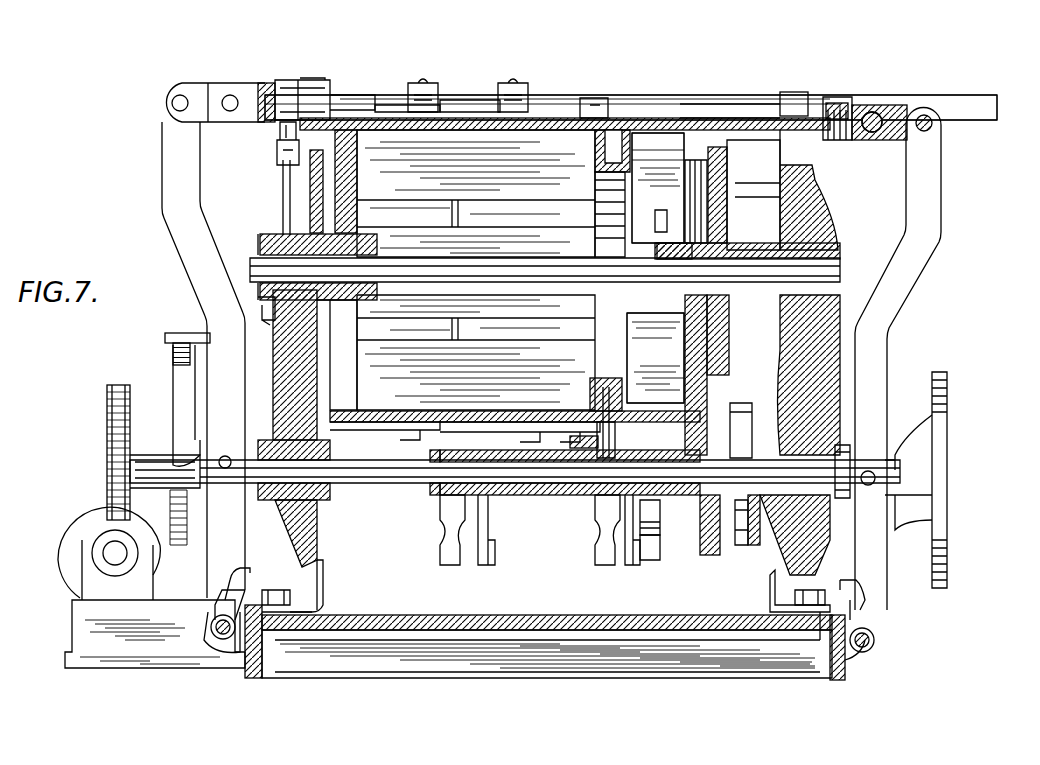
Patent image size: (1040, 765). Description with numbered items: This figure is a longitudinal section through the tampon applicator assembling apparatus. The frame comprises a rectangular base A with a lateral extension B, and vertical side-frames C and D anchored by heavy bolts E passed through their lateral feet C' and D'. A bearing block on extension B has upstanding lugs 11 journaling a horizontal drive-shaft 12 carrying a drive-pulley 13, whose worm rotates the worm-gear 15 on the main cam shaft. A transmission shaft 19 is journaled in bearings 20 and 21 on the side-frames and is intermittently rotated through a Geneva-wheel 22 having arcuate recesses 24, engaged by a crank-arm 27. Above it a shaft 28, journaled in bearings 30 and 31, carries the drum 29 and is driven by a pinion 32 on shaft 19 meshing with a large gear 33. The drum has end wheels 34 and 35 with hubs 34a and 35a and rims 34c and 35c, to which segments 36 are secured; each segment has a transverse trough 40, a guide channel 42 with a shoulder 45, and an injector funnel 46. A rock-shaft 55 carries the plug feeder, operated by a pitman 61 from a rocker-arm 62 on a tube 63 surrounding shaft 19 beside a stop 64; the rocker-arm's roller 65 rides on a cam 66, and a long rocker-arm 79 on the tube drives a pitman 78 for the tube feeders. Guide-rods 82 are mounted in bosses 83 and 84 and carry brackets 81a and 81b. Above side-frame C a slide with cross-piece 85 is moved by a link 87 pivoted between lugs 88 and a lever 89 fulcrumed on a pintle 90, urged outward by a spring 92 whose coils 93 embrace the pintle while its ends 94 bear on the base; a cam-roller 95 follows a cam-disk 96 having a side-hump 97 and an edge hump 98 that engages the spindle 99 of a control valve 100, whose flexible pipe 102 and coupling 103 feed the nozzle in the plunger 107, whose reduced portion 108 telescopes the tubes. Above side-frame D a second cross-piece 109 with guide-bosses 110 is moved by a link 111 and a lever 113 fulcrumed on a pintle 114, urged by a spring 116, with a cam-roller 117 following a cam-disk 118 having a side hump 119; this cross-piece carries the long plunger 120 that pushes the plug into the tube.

The guide-rods 82 is at (980, 108).
The link 87 is at (212, 85).
The lugs 88 is at (237, 118).
The cross-piece 85 is at (266, 85).
The plunger 107 is at (295, 95).
The bosses 83 is at (315, 80).
The reduced portion 108 is at (367, 95).
The guide channel 42 is at (395, 105).
The bracket 81a is at (432, 82).
The shoulder 45 is at (485, 100).
The bracket 81b is at (525, 82).
The injector funnel 46 is at (605, 98).
The long plunger 120 is at (742, 112).
The bosses 84 is at (795, 92).
The guide-bosses 110 is at (838, 97).
The cross-piece 109 is at (845, 105).
The link 111 is at (898, 105).
The lever 89 is at (168, 162).
The cam-roller 95 is at (245, 435).
The lever 113 is at (935, 186).
The base A is at (413, 665).
The spring ends 94 is at (272, 640).
The lateral extension B is at (113, 668).
The drive-pulley 13 is at (78, 522).
The drive-shaft 12 is at (106, 553).
The lugs 11 is at (80, 580).
The worm-gear 15 is at (112, 455).
The side-hump 97 is at (195, 455).
The cam-disk 96 is at (176, 395).
The edge hump 98 is at (172, 350).
The spindle 99 is at (197, 335).
The control valve 100 is at (258, 302).
The shaft 28 is at (552, 276).
The transmission shaft 19 is at (356, 478).
The transverse trough 40 is at (600, 150).
The rim 34c is at (357, 163).
The hub 34a is at (378, 250).
The bearing 30 is at (268, 235).
The flexible pipe 102 is at (285, 205).
The coupling 103 is at (278, 152).
The rim 35c is at (692, 165).
The pitman 61 is at (656, 220).
The gear 33 is at (725, 200).
The rock-shaft 55 is at (755, 183).
The bearing 31 is at (835, 250).
The hub 35a is at (670, 244).
The end wheel 34 is at (355, 322).
The pitman 78 is at (452, 325).
The segments 36 is at (510, 355).
The end wheel 35 is at (690, 345).
The crank-arm 27 is at (740, 405).
The bearing 21 is at (805, 505).
The drum 29 is at (366, 430).
The bearing 20 is at (280, 500).
The tube 63 is at (522, 495).
The stop 64 is at (430, 492).
The long rocker-arm 79 is at (478, 500).
The rocker-arm 62 is at (605, 525).
The cam 66 is at (655, 515).
The roller 65 is at (652, 560).
The pinion 32 is at (705, 545).
The Geneva-wheel 22 is at (742, 530).
The arcuate recesses 24 is at (760, 545).
The cam-roller 117 is at (843, 455).
The cam-disk 118 is at (948, 390).
The side hump 119 is at (905, 452).
The spring 92 is at (215, 578).
The coils 93 is at (212, 636).
The pintle 90 is at (232, 652).
The spring 116 is at (870, 612).
The pintle 114 is at (874, 643).
The side-frame C is at (315, 585).
The lateral foot C' is at (305, 598).
The bolts E is at (278, 590).
The side-frame D is at (780, 591).
The lateral foot D' is at (805, 634).